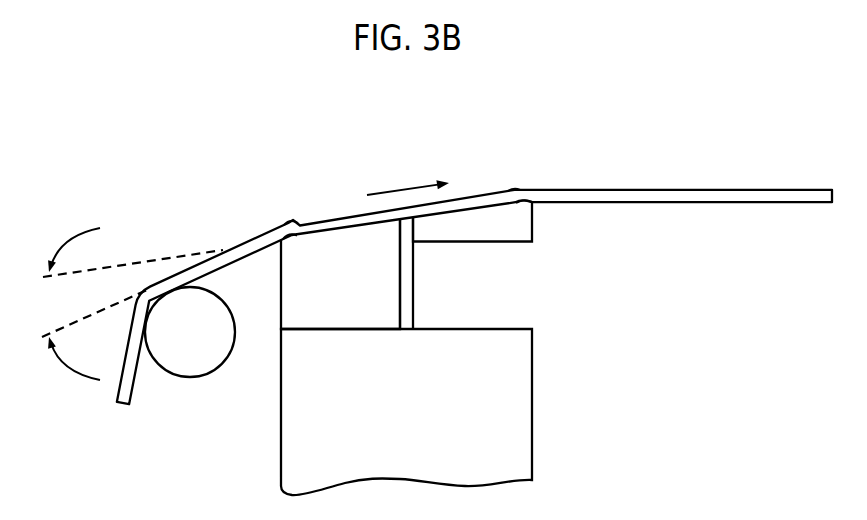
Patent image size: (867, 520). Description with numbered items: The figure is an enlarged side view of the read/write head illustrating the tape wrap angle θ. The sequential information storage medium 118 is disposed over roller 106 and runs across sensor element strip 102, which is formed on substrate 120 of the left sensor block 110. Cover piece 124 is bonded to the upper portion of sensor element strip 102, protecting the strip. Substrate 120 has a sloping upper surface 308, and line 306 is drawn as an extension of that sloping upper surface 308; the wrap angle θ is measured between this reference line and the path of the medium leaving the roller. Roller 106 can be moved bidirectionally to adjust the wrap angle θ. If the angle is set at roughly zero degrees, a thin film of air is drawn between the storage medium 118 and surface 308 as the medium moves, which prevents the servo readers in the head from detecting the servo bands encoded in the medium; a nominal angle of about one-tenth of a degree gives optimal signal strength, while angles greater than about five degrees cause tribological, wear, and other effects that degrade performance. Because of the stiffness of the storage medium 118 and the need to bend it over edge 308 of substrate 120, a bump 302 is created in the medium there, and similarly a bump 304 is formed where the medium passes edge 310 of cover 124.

The sensor element strip 102 is at (416, 308).
The roller 106 is at (187, 367).
The left sensor block 110 is at (418, 416).
The sequential information storage medium 118 is at (654, 215).
The substrate 120 is at (357, 290).
The cover piece 124 is at (508, 236).
The bump 302 is at (288, 221).
The bump 304 is at (515, 190).
The line 306 is at (145, 260).
The sloping upper surface 308 is at (278, 242).
The edge 310 is at (532, 203).